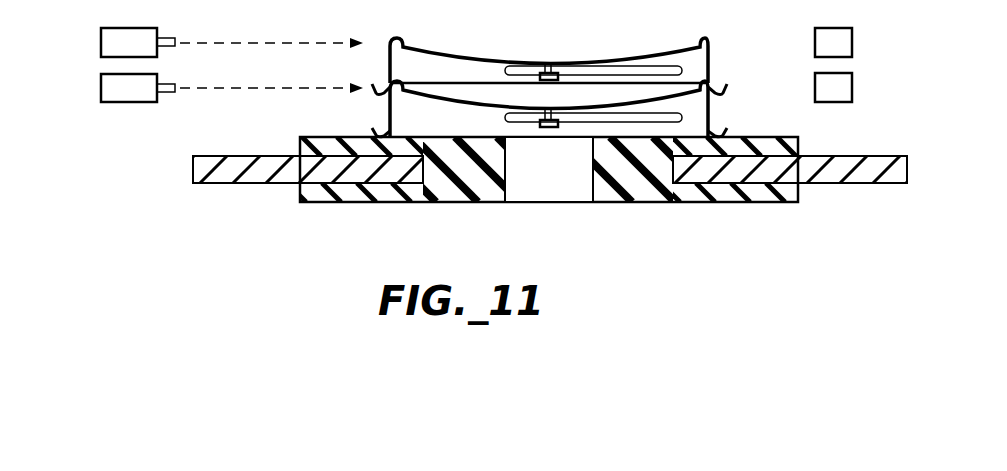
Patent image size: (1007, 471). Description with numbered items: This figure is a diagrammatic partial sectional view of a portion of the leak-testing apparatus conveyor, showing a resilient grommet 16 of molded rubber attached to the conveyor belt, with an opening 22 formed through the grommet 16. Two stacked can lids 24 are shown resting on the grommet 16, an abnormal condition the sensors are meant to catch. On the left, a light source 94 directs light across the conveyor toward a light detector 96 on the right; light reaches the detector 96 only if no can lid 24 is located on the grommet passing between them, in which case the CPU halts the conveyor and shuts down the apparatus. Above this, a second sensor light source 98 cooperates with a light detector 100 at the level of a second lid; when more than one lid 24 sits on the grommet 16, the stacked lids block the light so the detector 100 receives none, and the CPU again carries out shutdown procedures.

The grommet 16 is at (812, 153).
The opening 22 is at (507, 160).
The can lid 24 is at (430, 65).
The light source 94 is at (118, 93).
The light detector 96 is at (838, 93).
The sensor light source 98 is at (118, 48).
The light detector 100 is at (828, 47).